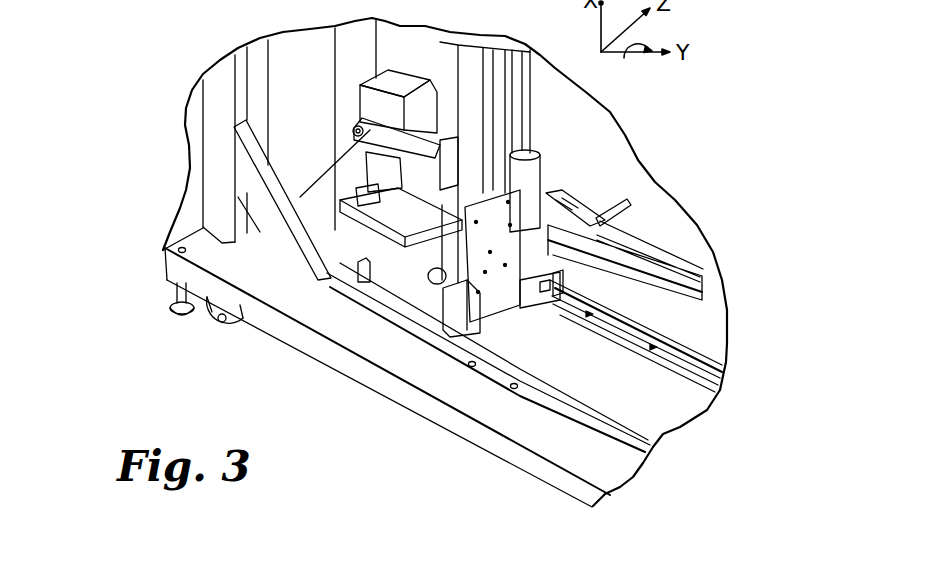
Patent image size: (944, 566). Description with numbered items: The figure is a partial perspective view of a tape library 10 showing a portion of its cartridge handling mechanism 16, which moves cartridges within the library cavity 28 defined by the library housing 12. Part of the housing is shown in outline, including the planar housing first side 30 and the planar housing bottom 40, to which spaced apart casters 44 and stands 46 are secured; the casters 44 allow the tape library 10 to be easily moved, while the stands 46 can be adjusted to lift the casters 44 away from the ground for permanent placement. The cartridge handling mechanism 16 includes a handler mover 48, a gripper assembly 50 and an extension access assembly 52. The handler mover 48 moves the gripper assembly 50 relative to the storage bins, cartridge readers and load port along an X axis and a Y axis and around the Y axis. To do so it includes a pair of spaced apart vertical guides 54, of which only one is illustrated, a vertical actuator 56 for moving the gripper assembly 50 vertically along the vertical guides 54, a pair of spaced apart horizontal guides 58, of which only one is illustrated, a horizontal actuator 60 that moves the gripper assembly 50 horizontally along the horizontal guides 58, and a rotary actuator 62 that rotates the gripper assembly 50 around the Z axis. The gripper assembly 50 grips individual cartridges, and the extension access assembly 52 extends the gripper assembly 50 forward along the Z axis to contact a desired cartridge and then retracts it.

The tape library 10 is at (630, 115).
The library housing 12 is at (333, 374).
The cartridge handling mechanism 16 is at (367, 107).
The library cavity 28 is at (424, 55).
The housing first side 30 is at (187, 203).
The housing bottom 40 is at (420, 413).
The casters 44 is at (223, 327).
The stands 46 is at (180, 317).
The handler mover 48 is at (350, 192).
The gripper assembly 50 is at (440, 157).
The extension access assembly 52 is at (378, 218).
The vertical guides 54 is at (518, 107).
The vertical actuator 56 is at (455, 270).
The horizontal guides 58 is at (680, 333).
The horizontal actuator 60 is at (373, 80).
The rotary actuator 62 is at (402, 242).